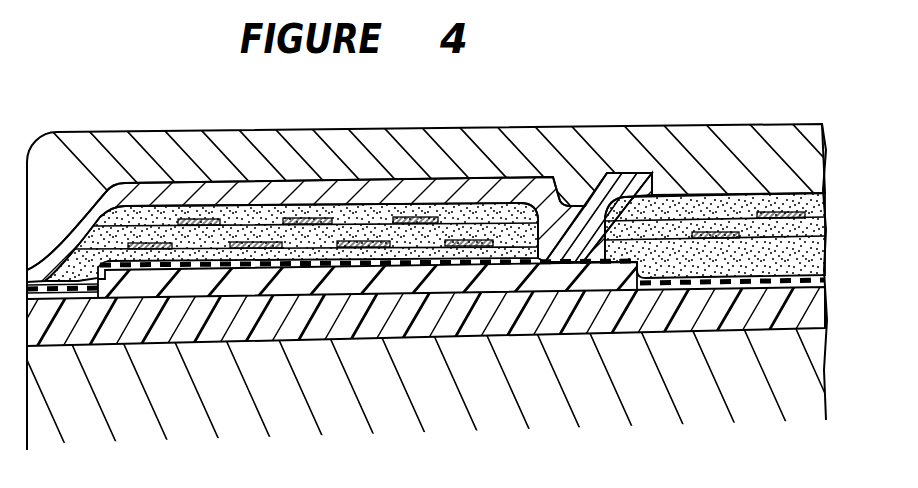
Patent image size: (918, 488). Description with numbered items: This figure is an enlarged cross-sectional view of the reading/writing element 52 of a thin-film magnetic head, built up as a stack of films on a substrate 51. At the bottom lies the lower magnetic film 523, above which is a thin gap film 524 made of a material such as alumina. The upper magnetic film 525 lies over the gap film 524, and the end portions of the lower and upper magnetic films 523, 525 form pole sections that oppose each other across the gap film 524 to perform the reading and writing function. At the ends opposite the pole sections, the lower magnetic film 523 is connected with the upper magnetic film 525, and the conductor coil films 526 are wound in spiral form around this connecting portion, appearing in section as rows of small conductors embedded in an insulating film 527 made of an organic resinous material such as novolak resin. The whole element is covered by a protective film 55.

The substrate 51 is at (827, 278).
The reading/writing element 52 is at (438, 272).
The protective film 55 is at (346, 157).
The lower magnetic film 523 is at (327, 341).
The gap film 524 is at (407, 262).
The upper magnetic film 525 is at (279, 199).
The conductor coil films 526 is at (411, 218).
The insulating film 527 is at (116, 228).